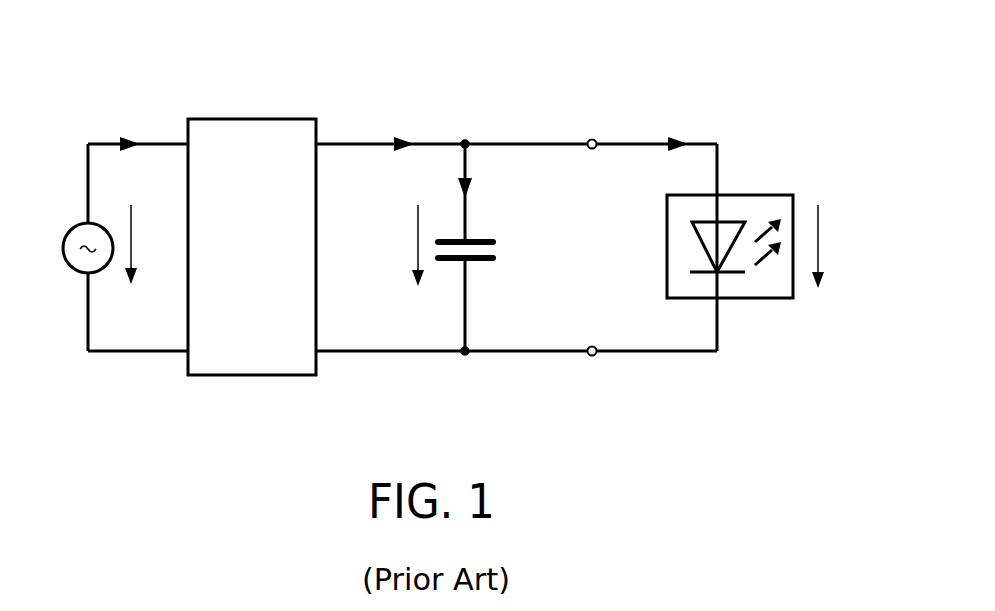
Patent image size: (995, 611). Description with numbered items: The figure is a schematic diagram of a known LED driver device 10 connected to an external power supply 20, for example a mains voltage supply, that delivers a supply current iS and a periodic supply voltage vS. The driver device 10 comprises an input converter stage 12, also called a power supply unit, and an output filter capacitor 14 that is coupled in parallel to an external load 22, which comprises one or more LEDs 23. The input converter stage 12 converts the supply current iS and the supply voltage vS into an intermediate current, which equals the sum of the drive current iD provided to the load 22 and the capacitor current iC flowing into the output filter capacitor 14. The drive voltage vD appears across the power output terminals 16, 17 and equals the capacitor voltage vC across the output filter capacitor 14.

The LED driver device 10 is at (625, 42).
The input converter stage 12 is at (254, 119).
The output filter capacitor 14 is at (484, 263).
The power output terminal 16 is at (594, 139).
The power output terminal 17 is at (591, 357).
The external power supply 20 is at (75, 270).
The external load 22 is at (762, 300).
The LED 23 is at (728, 220).